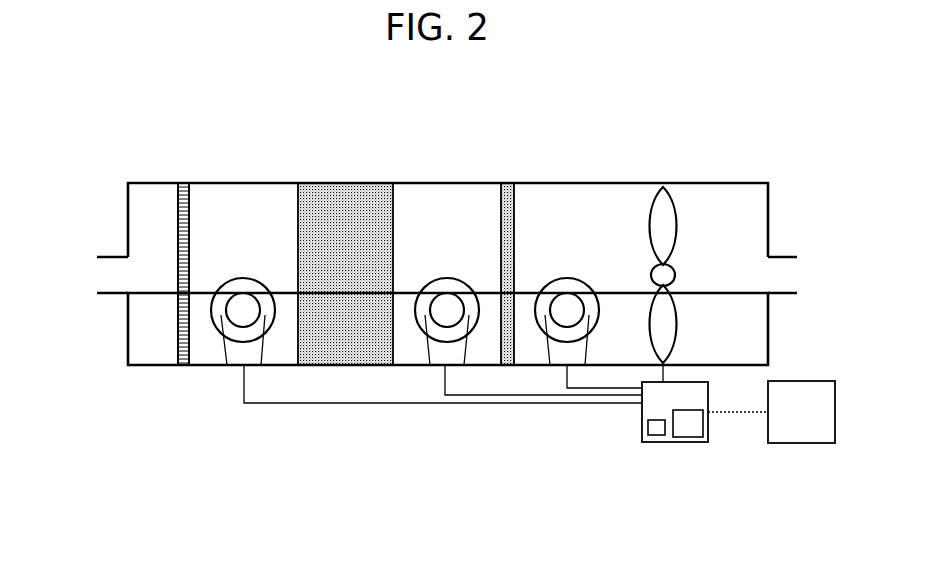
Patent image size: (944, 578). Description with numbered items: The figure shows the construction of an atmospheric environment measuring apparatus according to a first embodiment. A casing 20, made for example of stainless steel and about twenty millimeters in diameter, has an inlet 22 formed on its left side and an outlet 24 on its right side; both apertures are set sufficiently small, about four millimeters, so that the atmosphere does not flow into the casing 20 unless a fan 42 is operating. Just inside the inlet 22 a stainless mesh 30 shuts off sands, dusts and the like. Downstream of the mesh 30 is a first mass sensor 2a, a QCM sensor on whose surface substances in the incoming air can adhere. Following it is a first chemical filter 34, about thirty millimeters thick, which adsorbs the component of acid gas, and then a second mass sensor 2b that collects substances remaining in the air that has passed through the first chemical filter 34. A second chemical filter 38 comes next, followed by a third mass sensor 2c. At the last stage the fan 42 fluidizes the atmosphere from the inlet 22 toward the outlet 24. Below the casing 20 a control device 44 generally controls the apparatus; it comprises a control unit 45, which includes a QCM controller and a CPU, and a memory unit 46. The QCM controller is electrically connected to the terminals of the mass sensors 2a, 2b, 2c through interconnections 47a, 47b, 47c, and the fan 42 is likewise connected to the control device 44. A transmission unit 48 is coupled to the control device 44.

The casing 20 is at (245, 183).
The inlet 22 is at (105, 278).
The outlet 24 is at (790, 278).
The mesh 30 is at (178, 330).
The first mass sensor 2a is at (250, 262).
The second mass sensor 2b is at (455, 262).
The third mass sensor 2c is at (574, 262).
The first chemical filter 34 is at (315, 337).
The second chemical filter 38 is at (500, 333).
The fan 42 is at (662, 205).
The control device 44 is at (673, 445).
The control unit 45 is at (693, 428).
The memory unit 46 is at (655, 428).
The interconnection 47a is at (392, 404).
The interconnection 47b is at (545, 397).
The interconnection 47c is at (607, 390).
The transmission unit 48 is at (802, 432).